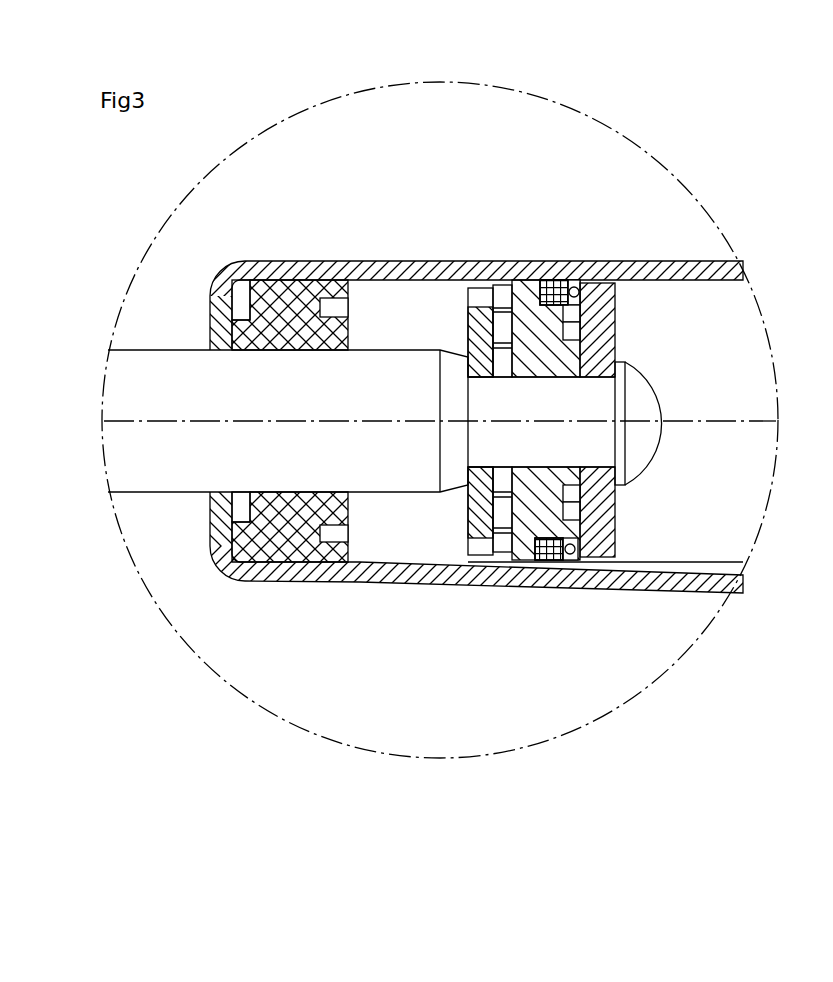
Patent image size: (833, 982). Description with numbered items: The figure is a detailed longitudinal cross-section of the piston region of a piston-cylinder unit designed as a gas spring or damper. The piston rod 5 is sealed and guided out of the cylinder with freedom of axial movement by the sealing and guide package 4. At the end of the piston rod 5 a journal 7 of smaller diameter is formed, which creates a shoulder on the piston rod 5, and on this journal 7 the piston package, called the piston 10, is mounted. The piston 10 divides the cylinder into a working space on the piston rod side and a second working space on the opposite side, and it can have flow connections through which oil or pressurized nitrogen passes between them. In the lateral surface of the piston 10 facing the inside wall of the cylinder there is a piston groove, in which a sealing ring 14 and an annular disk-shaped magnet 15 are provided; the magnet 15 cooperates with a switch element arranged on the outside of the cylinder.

The sealing and guide package 4 is at (277, 530).
The piston rod 5 is at (252, 380).
The journal 7 is at (576, 439).
The piston 10 is at (522, 302).
The sealing ring 14 is at (573, 557).
The annular disk-shaped magnet 15 is at (562, 282).